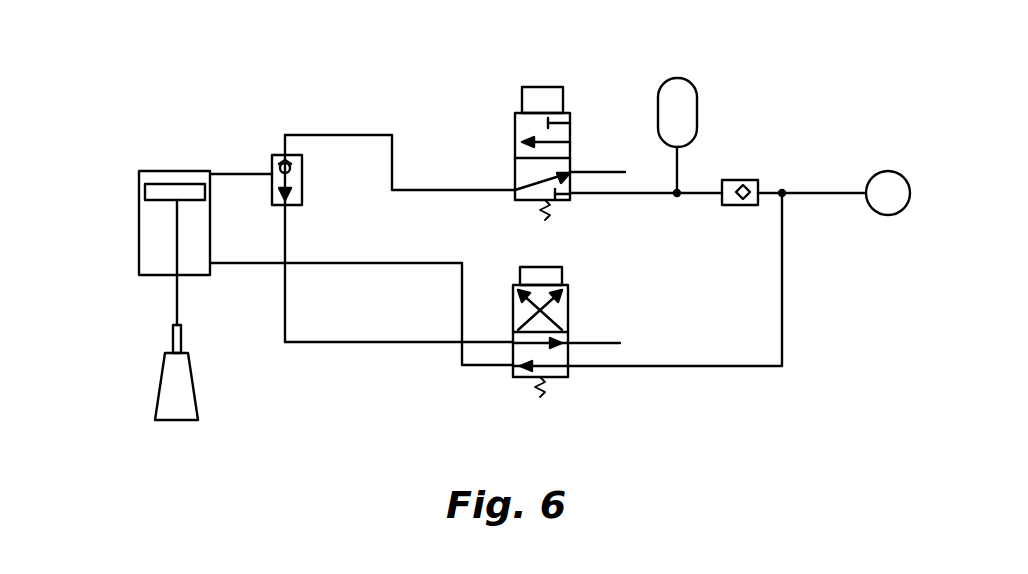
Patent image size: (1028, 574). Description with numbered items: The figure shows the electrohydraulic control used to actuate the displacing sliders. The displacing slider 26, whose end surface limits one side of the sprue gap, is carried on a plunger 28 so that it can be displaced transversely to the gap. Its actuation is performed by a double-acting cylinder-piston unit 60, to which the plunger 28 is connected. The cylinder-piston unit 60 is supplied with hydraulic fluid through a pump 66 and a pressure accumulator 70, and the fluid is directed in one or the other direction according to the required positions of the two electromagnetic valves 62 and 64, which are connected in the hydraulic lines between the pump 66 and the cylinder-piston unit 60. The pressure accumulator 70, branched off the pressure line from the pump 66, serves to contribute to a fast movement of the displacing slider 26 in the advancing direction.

The displacing slider 26 is at (175, 393).
The plunger 28 is at (175, 322).
The double-acting cylinder-piston unit 60 is at (163, 237).
The electromagnetic valve 62 is at (528, 125).
The electromagnetic valve 64 is at (548, 353).
The pump 66 is at (897, 178).
The pressure accumulator 70 is at (673, 98).